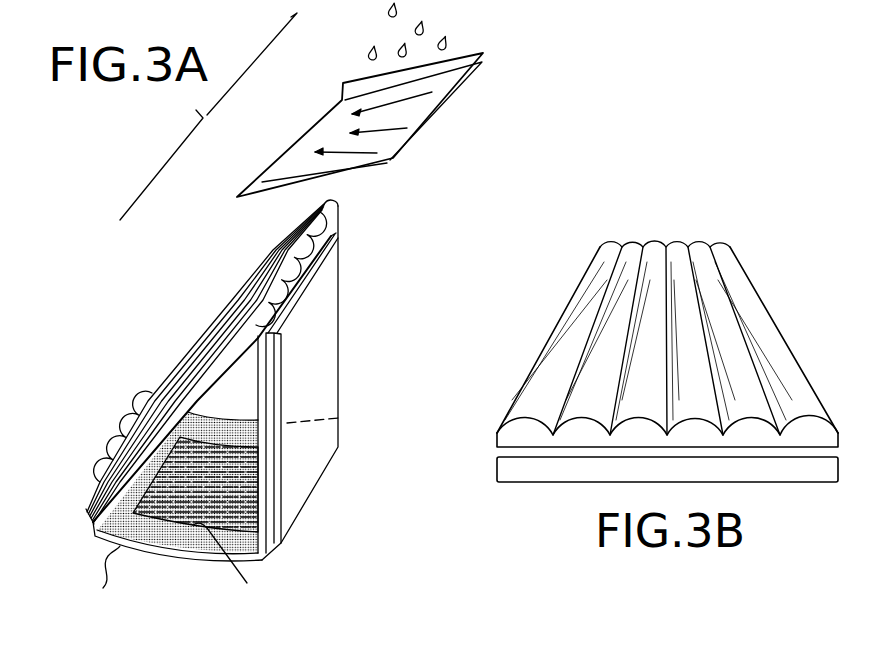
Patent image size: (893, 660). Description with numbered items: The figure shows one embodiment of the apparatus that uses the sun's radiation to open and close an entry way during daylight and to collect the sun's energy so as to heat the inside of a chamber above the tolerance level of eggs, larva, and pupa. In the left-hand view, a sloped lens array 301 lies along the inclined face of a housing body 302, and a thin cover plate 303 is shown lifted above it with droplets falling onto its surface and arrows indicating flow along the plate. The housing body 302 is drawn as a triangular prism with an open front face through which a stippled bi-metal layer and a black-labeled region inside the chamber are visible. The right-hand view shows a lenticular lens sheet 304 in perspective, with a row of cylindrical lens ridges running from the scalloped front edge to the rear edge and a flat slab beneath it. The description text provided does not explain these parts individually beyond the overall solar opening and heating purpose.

In FIG. 3A, the lens array 301 is at (297, 248).
In FIG. 3A, the housing body 302 is at (323, 318).
In FIG. 3A, the cover plate 303 is at (433, 100).
In FIG. 3B, the lenticular lens sheet 304 is at (733, 287).